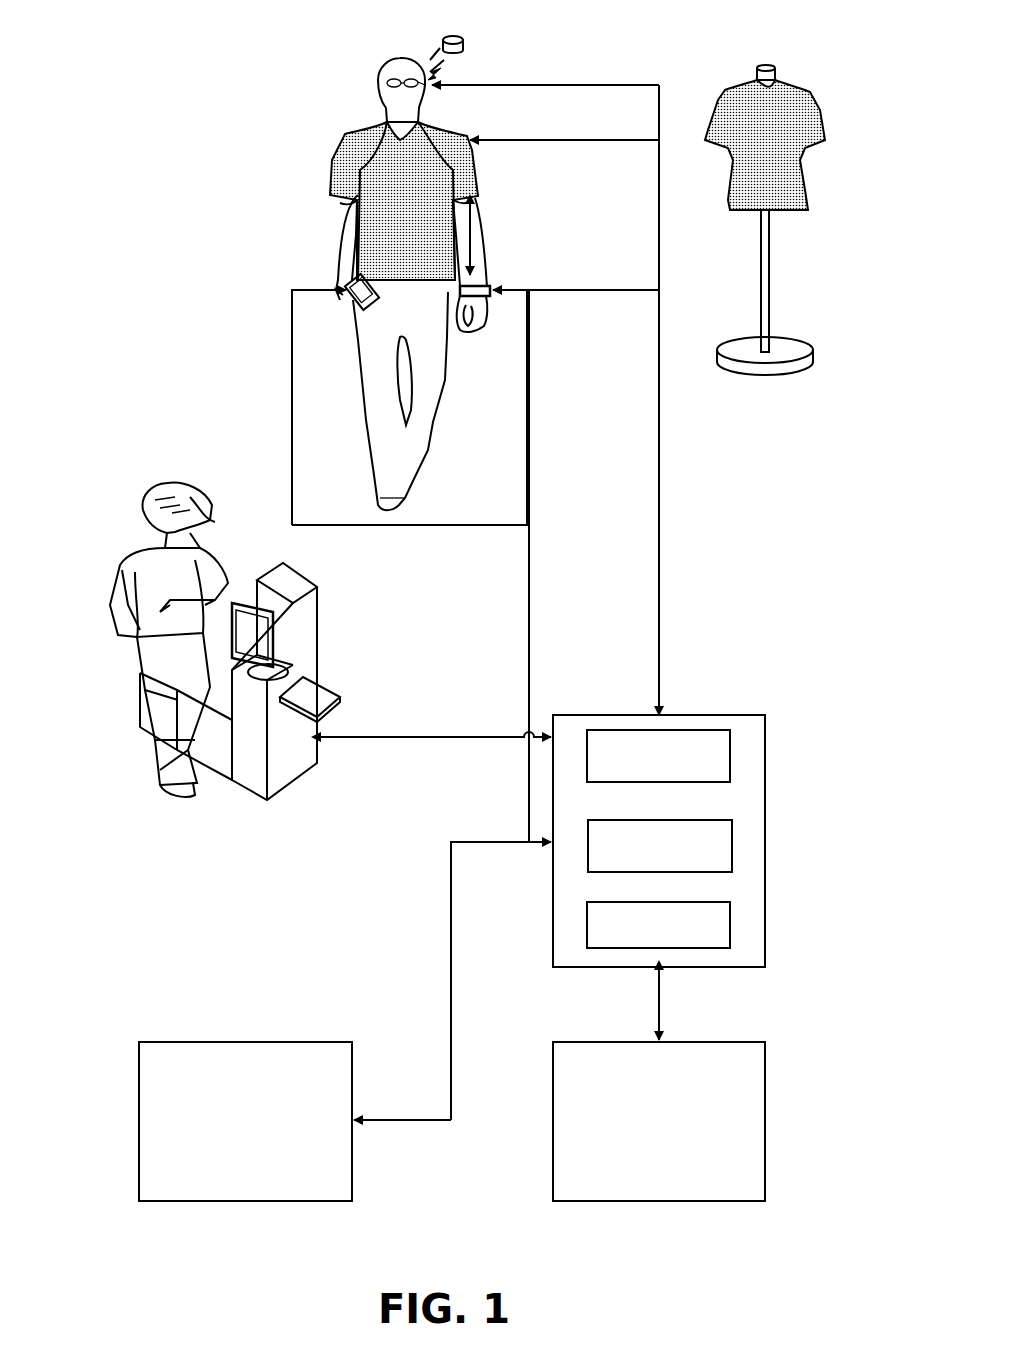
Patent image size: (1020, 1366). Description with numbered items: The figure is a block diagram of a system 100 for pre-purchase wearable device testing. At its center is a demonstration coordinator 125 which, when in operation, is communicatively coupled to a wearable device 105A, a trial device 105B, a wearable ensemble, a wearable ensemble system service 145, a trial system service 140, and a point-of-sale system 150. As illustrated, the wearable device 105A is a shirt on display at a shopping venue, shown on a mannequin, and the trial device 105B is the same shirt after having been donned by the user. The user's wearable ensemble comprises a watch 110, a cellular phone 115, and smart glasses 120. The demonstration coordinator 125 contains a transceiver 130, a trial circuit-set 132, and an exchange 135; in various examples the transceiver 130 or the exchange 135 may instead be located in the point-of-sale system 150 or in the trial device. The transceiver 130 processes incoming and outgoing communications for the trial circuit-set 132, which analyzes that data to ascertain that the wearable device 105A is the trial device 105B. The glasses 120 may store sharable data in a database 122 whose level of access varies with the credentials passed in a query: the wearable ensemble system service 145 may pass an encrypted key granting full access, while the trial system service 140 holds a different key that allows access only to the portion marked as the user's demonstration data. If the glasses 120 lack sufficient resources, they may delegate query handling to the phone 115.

The system 100 is at (735, 30).
The wearable device 105A is at (718, 95).
The trial device 105B is at (345, 150).
The watch 110 is at (486, 286).
The cellular phone 115 is at (355, 305).
The smart glasses 120 is at (383, 82).
The database 122 is at (470, 40).
The demonstration coordinator 125 is at (735, 715).
The transceiver 130 is at (731, 755).
The trial circuit-set 132 is at (731, 845).
The exchange 135 is at (731, 925).
The trial system service 140 is at (570, 1042).
The wearable ensemble system service 145 is at (152, 1042).
The point-of-sale system 150 is at (318, 588).